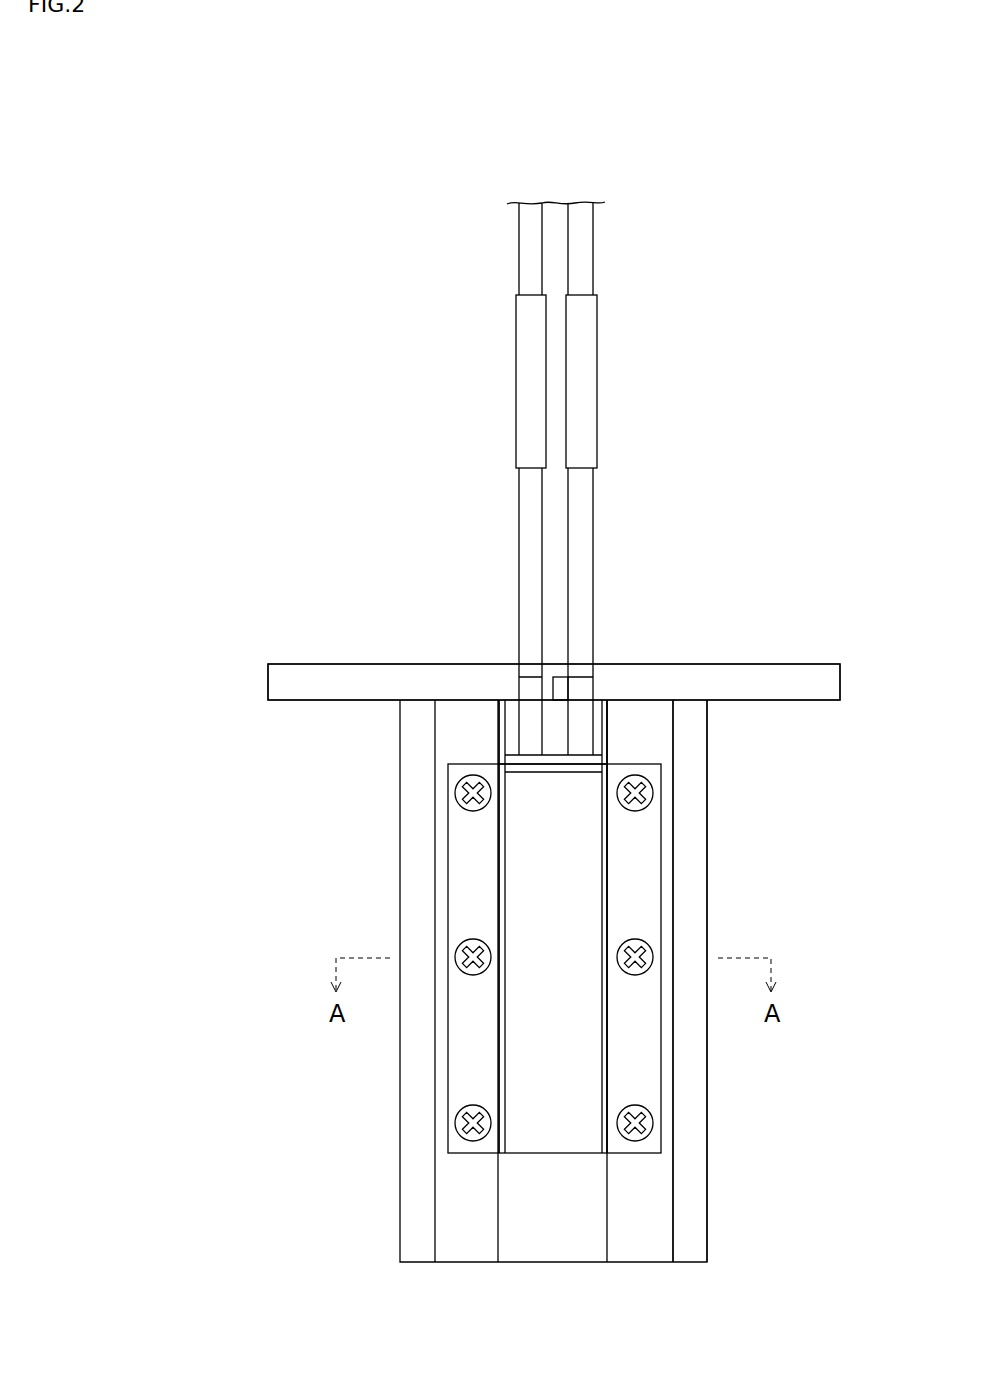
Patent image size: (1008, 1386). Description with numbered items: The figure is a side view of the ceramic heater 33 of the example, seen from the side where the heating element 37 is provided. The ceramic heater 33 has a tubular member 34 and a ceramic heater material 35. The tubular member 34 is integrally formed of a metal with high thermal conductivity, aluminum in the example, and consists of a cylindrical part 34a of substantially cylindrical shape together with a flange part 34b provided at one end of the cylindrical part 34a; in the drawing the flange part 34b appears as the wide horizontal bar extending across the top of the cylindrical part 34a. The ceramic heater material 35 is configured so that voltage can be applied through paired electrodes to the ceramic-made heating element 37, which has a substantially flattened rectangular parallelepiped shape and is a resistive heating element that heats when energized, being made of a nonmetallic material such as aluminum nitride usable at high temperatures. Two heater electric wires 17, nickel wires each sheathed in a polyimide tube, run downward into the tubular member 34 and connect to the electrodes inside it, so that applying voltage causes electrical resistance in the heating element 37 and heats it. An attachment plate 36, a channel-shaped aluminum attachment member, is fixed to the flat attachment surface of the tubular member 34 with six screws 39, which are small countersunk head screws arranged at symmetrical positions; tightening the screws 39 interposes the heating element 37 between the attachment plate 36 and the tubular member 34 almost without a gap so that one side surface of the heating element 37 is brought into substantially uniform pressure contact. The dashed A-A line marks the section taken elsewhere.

The heater electric wire 17 is at (582, 500).
The ceramic heater 33 is at (805, 653).
The tubular member 34 is at (713, 1212).
The cylindrical part 34a is at (690, 790).
The flange part 34b is at (287, 678).
The ceramic heater material 35 is at (552, 1125).
The attachment plate 36 is at (540, 1020).
The heating element 37 is at (553, 926).
The screw 39 is at (455, 790).